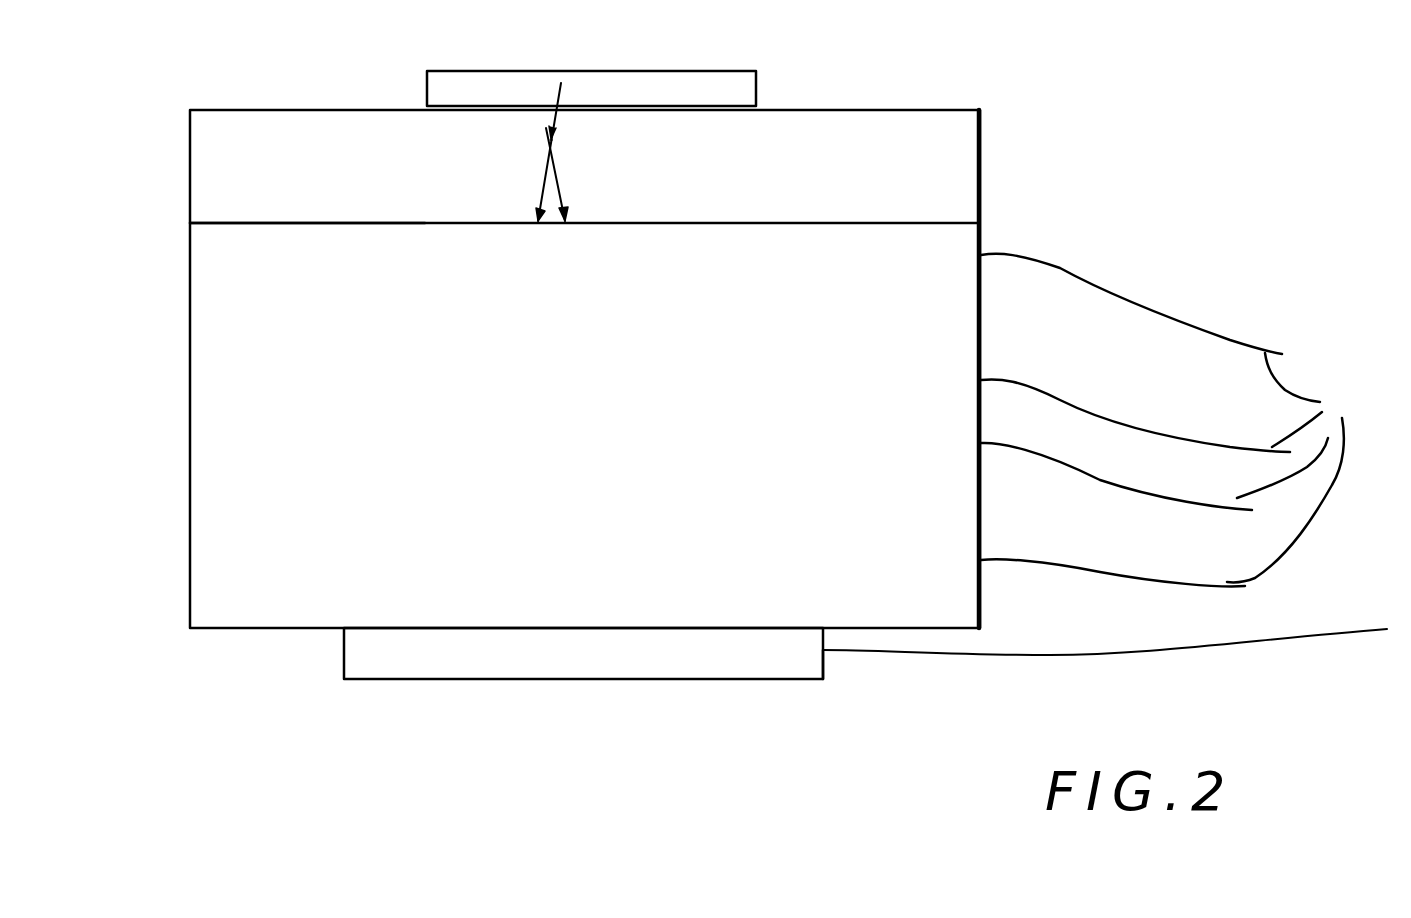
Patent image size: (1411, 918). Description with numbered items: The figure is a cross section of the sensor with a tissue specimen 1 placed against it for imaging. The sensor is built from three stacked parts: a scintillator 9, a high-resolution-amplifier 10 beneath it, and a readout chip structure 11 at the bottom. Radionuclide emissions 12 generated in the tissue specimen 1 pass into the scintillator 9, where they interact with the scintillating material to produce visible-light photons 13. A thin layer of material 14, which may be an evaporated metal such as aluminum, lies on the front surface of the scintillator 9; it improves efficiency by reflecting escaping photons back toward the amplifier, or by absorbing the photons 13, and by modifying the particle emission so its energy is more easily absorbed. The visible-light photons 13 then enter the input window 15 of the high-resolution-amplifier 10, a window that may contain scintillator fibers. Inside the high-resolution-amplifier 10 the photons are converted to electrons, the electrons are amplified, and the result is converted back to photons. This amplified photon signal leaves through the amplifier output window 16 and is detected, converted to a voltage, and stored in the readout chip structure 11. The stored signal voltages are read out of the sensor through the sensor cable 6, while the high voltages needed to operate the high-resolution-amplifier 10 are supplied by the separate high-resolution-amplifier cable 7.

The tissue specimen 1 is at (757, 89).
The sensor cable 6 is at (1182, 652).
The high-resolution-amplifier cable 7 is at (1165, 420).
The scintillator 9 is at (923, 195).
The high-resolution-amplifier 10 is at (948, 262).
The readout chip structure 11 is at (362, 661).
The radionuclide emissions 12 is at (587, 87).
The visible-light photons 13 is at (510, 158).
The thin layer of material 14 is at (981, 111).
The input window 15 is at (425, 224).
The amplifier output window 16 is at (800, 660).